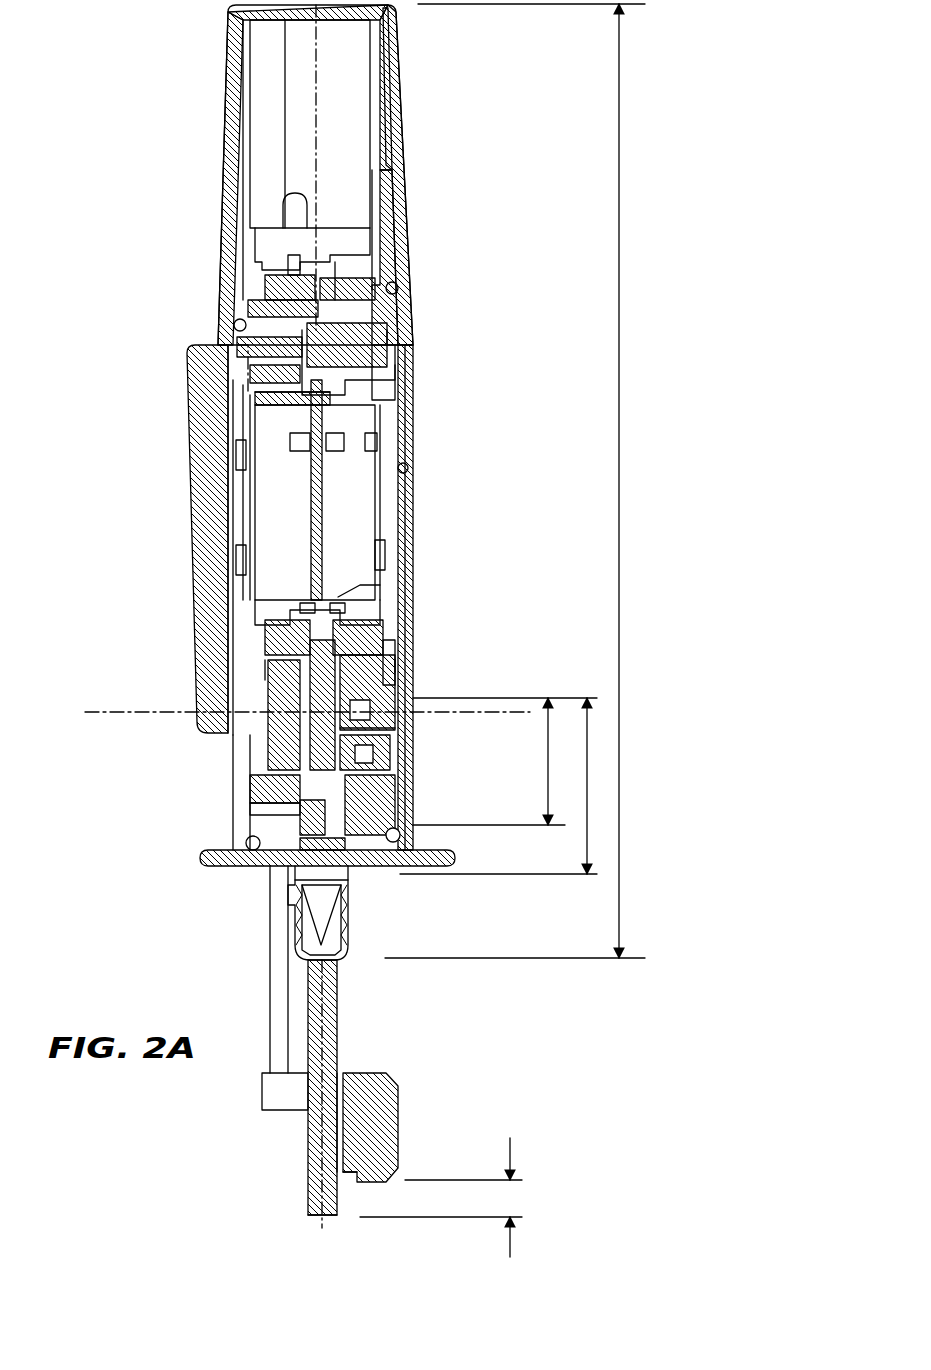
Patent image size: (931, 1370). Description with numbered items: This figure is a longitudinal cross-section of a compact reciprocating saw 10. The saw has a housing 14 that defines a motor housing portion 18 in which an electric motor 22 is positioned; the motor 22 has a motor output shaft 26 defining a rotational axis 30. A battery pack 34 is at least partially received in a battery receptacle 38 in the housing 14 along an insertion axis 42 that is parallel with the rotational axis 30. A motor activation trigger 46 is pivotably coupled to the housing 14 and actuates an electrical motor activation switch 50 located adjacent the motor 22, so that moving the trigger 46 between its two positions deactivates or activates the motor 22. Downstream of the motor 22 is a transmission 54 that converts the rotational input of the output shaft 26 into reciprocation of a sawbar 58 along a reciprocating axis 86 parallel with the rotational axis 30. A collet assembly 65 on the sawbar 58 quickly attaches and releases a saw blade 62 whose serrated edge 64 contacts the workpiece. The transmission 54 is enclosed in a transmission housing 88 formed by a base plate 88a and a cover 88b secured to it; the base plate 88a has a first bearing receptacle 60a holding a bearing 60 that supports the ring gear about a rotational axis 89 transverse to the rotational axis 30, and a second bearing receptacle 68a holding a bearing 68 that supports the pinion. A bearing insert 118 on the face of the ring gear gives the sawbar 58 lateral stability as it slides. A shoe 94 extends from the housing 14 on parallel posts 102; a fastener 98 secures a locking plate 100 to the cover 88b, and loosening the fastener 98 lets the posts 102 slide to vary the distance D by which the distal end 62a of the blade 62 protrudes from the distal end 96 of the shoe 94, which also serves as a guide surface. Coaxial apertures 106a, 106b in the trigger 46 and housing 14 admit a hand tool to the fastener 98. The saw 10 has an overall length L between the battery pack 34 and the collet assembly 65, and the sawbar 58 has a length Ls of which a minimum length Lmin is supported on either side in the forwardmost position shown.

The reciprocating saw 10 is at (490, 382).
The housing 14 is at (415, 265).
The motor housing portion 18 is at (410, 455).
The electric motor 22 is at (340, 472).
The motor output shaft 26 is at (322, 532).
The rotational axis 30 is at (305, 410).
The battery pack 34 is at (405, 60).
The battery receptacle 38 is at (260, 150).
The insertion axis 42 is at (310, 75).
The motor activation trigger 46 is at (190, 472).
The motor activation switch 50 is at (415, 345).
The transmission 54 is at (400, 772).
The sawbar 58 is at (362, 838).
The bearing 60 is at (395, 668).
The first bearing receptacle 60a is at (400, 727).
The saw blade 62 is at (337, 1052).
The distal end of the saw blade 62a is at (312, 1207).
The serrated edge 64 is at (308, 1130).
The collet assembly 65 is at (372, 920).
The bearing 68 is at (265, 612).
The second bearing receptacle 68a is at (355, 592).
The reciprocating axis 86 is at (340, 1012).
The transmission housing 88 is at (400, 660).
The base plate 88a is at (405, 652).
The cover 88b is at (265, 672).
The rotational axis 89 is at (470, 712).
The shoe 94 is at (400, 1112).
The distal end of the shoe 96 is at (356, 1182).
The fastener 98 is at (232, 835).
The locking plate 100 is at (245, 724).
The posts 102 is at (275, 993).
The aperture 106a is at (235, 787).
The aperture 106b is at (240, 770).
The bearing insert 118 is at (265, 692).
The overall length L is at (515, 481).
The sawbar length Ls is at (505, 786).
The minimum supported length Lmin is at (492, 761).
The cutting depth distance D is at (452, 1189).